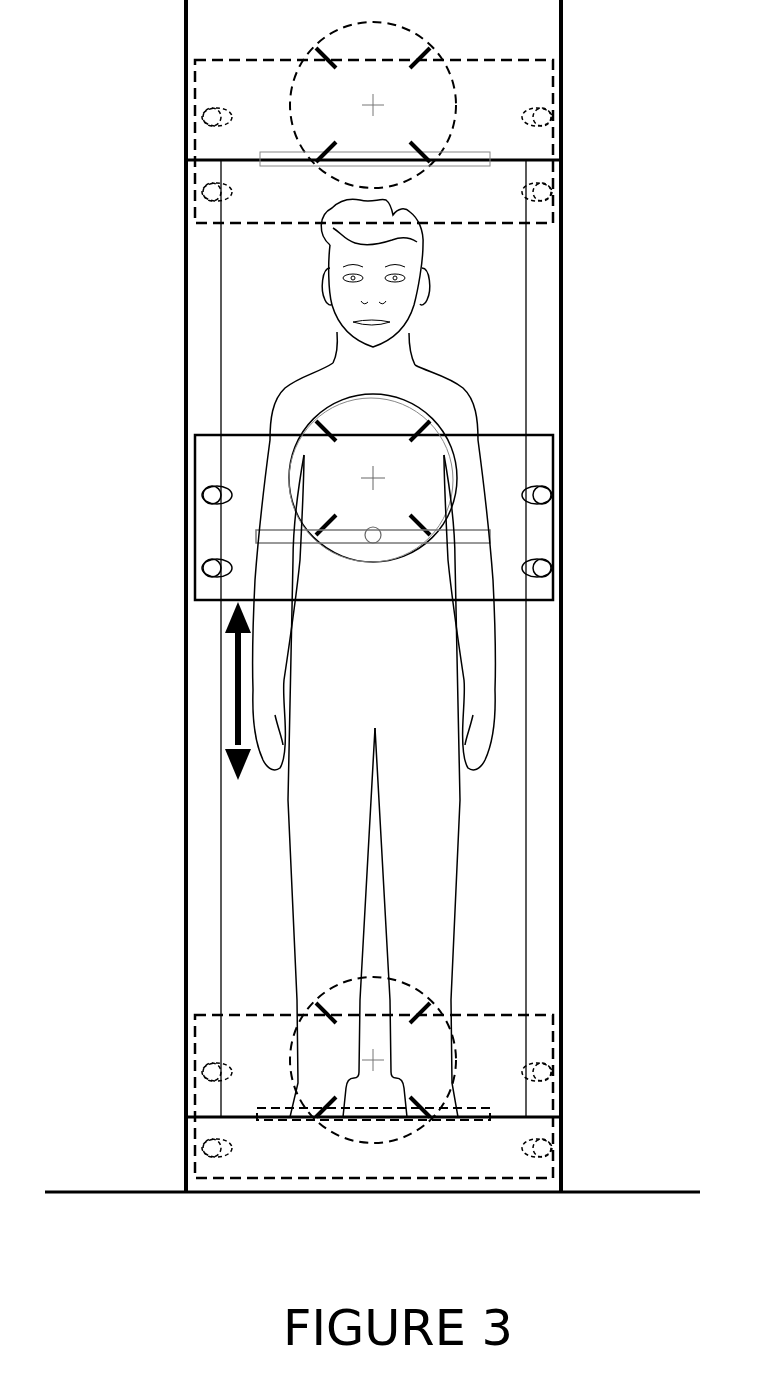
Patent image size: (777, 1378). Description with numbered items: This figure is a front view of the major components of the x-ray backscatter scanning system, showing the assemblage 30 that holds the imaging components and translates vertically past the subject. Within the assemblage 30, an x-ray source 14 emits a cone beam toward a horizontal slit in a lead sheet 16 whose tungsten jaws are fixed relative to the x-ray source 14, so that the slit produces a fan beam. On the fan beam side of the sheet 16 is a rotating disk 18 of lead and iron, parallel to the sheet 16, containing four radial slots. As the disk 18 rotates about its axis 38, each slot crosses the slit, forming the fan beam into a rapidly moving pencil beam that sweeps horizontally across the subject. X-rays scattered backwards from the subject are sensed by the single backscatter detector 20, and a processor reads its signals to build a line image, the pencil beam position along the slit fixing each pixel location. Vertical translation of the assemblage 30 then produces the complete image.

The x-ray source 14 is at (373, 535).
The lead sheet 16 is at (473, 542).
The rotating disk 18 is at (413, 404).
The backscatter detector 20 is at (540, 458).
The assemblage 30 is at (195, 531).
The axis 38 is at (373, 478).